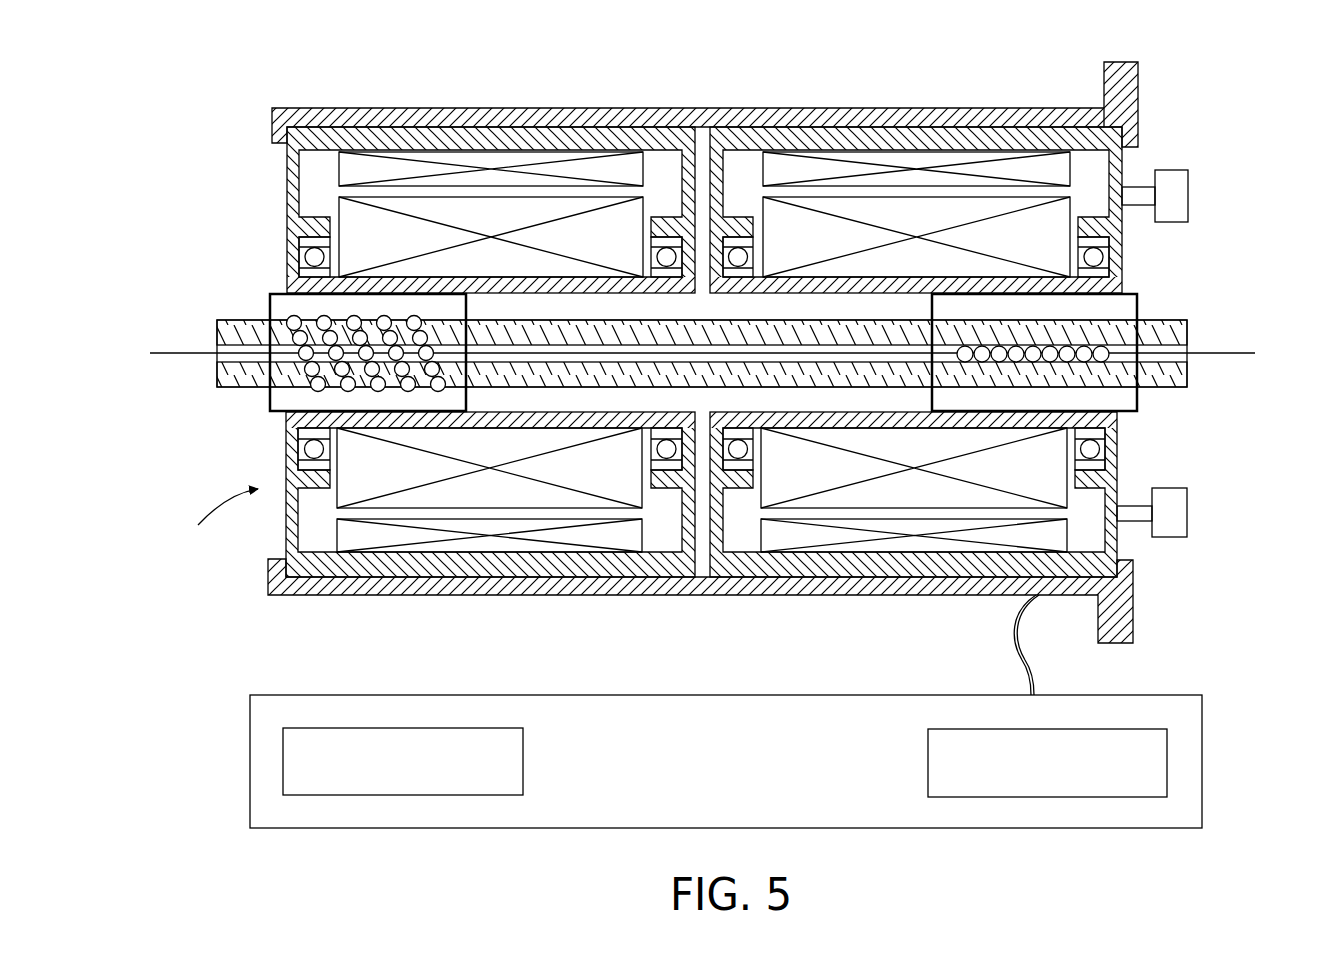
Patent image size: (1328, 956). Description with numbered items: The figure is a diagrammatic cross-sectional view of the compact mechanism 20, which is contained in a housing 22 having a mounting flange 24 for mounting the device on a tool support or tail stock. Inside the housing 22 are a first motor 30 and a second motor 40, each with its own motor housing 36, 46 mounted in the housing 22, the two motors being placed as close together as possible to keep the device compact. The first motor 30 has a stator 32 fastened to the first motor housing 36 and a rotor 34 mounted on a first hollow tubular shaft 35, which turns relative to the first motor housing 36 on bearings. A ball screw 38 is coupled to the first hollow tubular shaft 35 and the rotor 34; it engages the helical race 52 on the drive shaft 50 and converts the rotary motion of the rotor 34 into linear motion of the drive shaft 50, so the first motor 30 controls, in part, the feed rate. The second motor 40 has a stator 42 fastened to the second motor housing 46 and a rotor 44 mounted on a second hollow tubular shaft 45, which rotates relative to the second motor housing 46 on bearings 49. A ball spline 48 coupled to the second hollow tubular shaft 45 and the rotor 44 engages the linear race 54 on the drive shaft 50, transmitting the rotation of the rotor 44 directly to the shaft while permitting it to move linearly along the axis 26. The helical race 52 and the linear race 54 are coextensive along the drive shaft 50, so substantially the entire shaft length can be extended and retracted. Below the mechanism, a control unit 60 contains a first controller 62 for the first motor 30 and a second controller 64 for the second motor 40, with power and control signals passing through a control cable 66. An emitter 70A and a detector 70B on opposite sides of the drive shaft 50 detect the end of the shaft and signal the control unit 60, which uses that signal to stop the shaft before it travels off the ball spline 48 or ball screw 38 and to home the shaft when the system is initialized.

The compact mechanism 20 is at (645, 93).
The housing 22 is at (932, 112).
The mounting flange 24 is at (1120, 95).
The axis 26 is at (172, 352).
The first motor 30 is at (270, 170).
The stator 32 is at (387, 167).
The rotor 34 is at (490, 220).
The first hollow tubular shaft 35 is at (285, 420).
The first motor housing 36 is at (306, 135).
The ball screw 38 is at (272, 293).
The second motor 40 is at (1140, 160).
The stator 42 is at (785, 168).
The rotor 44 is at (882, 213).
The second hollow tubular shaft 45 is at (1120, 423).
The second motor housing 46 is at (1022, 137).
The ball spline 48 is at (1138, 298).
The bearings 49 is at (1130, 450).
The drive shaft 50 is at (227, 373).
The helical race 52 is at (627, 333).
The linear race 54 is at (703, 358).
The control unit 60 is at (726, 790).
The first controller 62 is at (393, 786).
The second controller 64 is at (1047, 778).
The control cable 66 is at (1013, 636).
The emitter 70A is at (1172, 195).
The detector 70B is at (1168, 515).